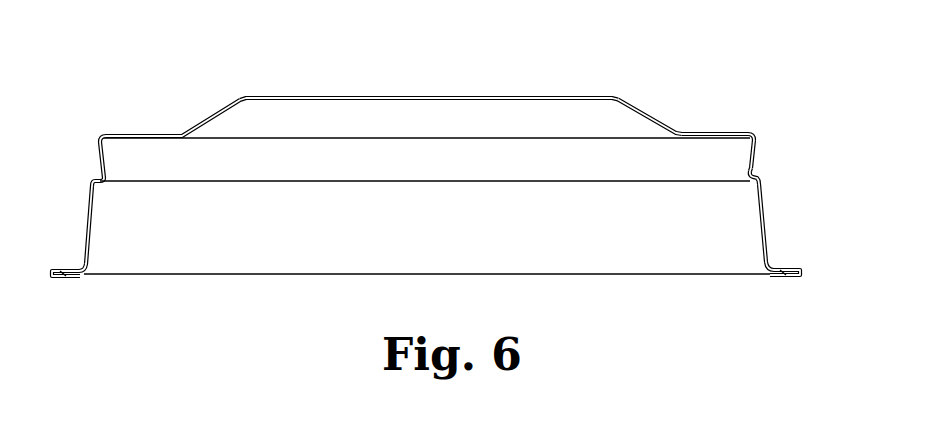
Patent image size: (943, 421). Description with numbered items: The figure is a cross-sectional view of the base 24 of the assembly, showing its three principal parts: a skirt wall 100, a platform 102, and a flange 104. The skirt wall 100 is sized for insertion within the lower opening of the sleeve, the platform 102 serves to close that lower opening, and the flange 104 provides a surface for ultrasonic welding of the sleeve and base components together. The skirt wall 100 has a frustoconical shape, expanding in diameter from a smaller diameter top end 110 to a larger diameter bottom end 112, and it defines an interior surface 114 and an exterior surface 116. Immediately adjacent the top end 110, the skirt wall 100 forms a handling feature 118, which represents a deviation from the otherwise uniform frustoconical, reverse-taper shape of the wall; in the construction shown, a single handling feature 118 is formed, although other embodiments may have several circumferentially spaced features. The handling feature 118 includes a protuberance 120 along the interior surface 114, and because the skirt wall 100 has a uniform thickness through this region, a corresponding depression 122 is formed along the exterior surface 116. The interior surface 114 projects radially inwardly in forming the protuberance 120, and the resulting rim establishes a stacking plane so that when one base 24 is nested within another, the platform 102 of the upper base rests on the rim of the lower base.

The base 24 is at (385, 45).
The skirt wall 100 is at (768, 224).
The platform 102 is at (683, 130).
The flange 104 is at (800, 265).
The top end 110 is at (755, 143).
The bottom end 112 is at (762, 275).
The interior surface 114 is at (95, 218).
The exterior surface 116 is at (87, 236).
The handling feature 118 is at (522, 167).
The protuberance 120 is at (752, 158).
The depression 122 is at (757, 170).